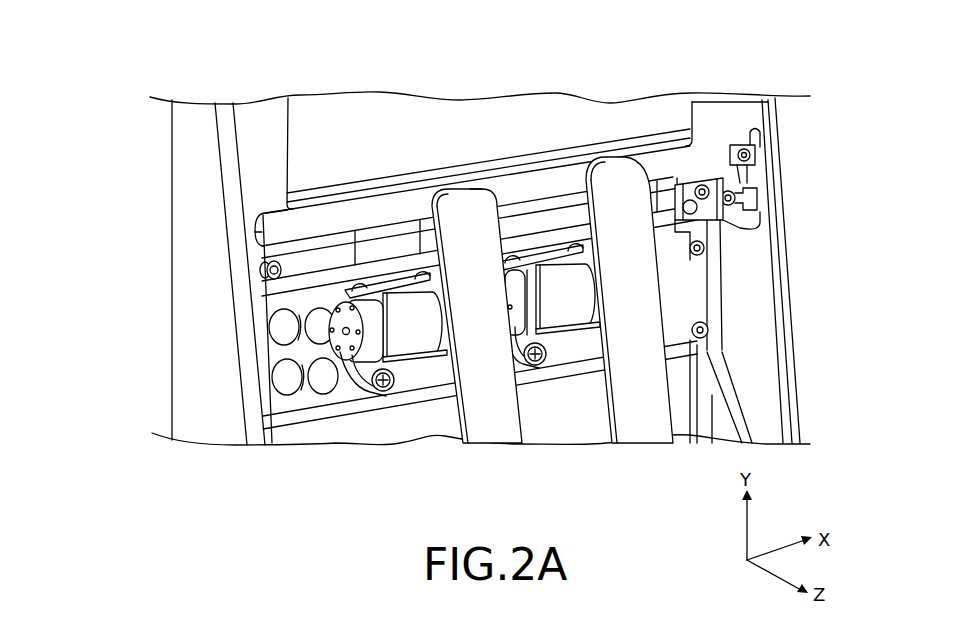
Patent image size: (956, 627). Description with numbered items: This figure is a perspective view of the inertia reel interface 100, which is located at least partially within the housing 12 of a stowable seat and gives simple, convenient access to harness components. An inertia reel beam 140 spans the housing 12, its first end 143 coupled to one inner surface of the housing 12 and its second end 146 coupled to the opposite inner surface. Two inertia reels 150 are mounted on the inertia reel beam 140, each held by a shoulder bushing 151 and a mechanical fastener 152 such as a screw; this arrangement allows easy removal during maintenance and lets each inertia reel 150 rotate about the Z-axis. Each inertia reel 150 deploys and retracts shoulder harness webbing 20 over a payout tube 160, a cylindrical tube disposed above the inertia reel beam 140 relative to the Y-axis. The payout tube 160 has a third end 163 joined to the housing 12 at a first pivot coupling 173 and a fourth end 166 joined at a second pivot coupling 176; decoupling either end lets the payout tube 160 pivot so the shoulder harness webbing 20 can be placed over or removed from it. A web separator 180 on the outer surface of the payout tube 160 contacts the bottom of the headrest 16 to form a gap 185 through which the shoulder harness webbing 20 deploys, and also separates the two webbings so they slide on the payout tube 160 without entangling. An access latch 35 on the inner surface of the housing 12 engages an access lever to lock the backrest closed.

The inertia reel interface 100 is at (162, 75).
The housing 12 is at (178, 128).
The headrest 16 is at (343, 110).
The shoulder harness webbing 20 is at (467, 422).
The access latch 35 is at (265, 270).
The inertia reel beam 140 is at (289, 415).
The first end 143 is at (265, 355).
The second end 146 is at (703, 293).
The inertia reel 150 is at (330, 358).
The shoulder bushing 151 is at (370, 393).
The mechanical fastener 152 is at (385, 393).
The payout tube 160 is at (528, 186).
The third end 163 is at (257, 214).
The fourth end 166 is at (732, 144).
The first pivot coupling 173 is at (258, 235).
The second pivot coupling 176 is at (750, 156).
The web separator 180 is at (522, 170).
The gap 185 is at (492, 184).